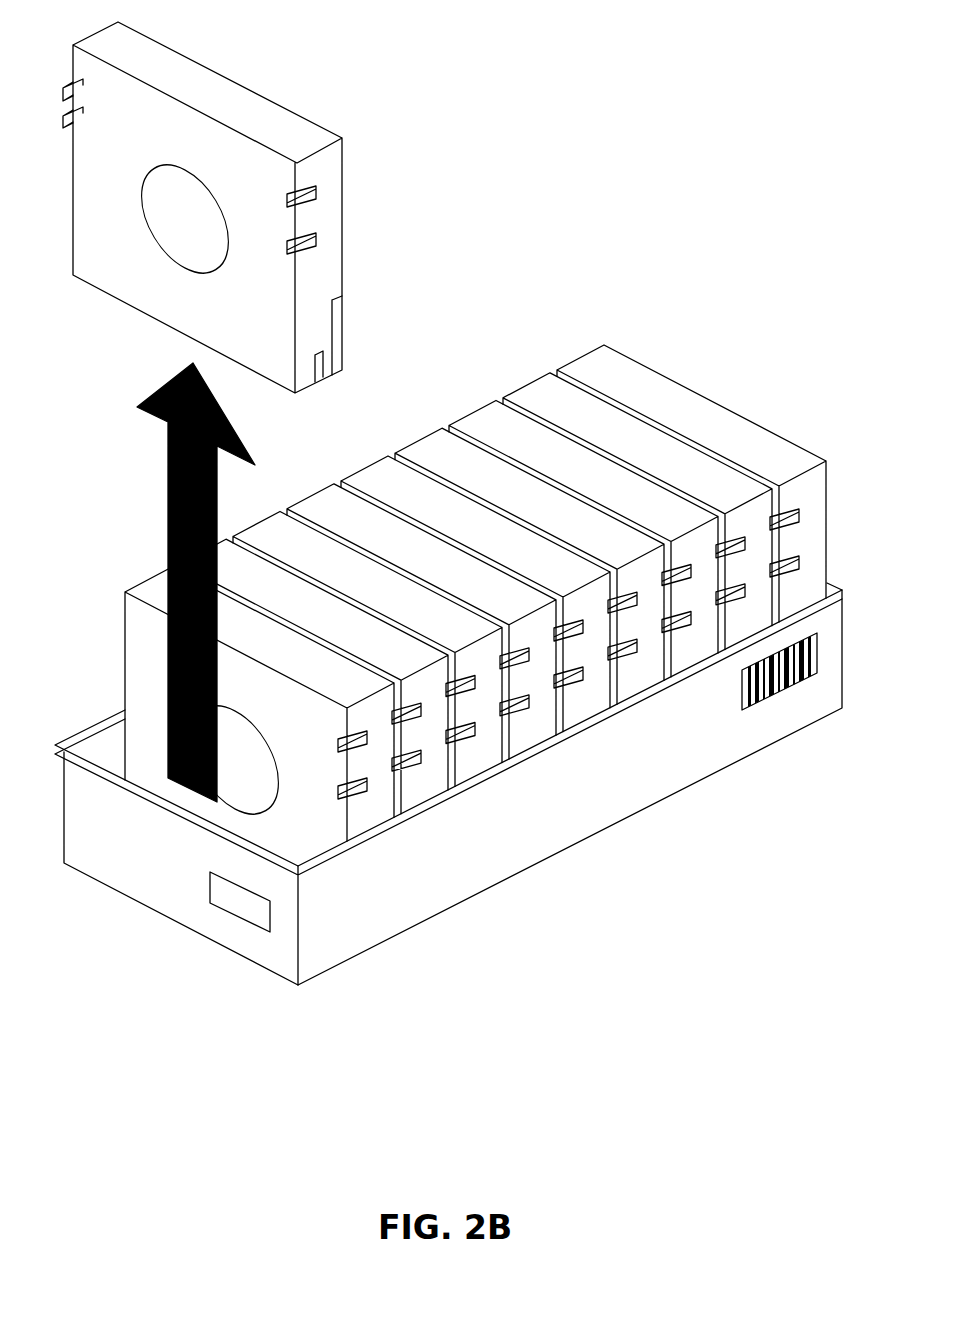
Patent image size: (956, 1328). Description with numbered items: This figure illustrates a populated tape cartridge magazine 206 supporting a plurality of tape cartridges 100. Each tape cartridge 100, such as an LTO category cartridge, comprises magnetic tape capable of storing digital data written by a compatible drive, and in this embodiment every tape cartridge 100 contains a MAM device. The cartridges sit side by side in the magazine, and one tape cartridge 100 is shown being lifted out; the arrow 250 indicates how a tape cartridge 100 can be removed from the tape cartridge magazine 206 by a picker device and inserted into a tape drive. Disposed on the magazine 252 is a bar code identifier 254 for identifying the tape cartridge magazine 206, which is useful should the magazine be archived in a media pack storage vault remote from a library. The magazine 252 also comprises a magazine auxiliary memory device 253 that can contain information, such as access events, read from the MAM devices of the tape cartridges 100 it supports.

The tape cartridge magazine 206 is at (712, 63).
The tape cartridge 100 is at (343, 272).
The arrow 250 is at (167, 548).
The tape cartridge magazine 252 is at (525, 878).
The magazine auxiliary memory device 253 is at (234, 914).
The bar code identifier 254 is at (757, 703).